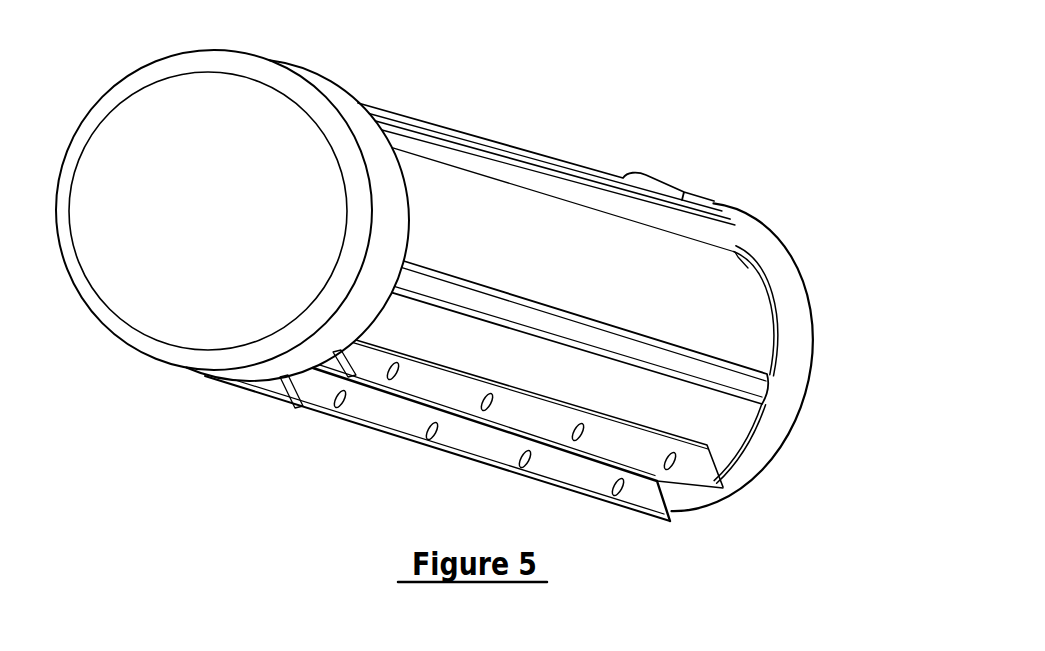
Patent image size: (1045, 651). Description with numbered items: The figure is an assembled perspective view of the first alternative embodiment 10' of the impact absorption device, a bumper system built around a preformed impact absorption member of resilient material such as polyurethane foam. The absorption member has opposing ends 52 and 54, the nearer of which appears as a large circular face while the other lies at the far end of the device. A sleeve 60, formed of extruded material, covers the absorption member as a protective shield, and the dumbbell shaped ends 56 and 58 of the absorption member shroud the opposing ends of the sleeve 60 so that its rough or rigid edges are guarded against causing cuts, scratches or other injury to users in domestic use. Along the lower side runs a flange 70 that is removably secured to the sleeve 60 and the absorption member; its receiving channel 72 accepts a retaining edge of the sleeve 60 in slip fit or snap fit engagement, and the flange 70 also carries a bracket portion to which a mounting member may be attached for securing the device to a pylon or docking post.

The first alternative embodiment of the impact absorption device 10' is at (473, 281).
The end of the impact absorption member 52 is at (222, 228).
The end of the impact absorption member 54 is at (822, 372).
The dumbbell shaped end 56 is at (291, 68).
The dumbbell shaped end 58 is at (778, 270).
The sleeve 60 is at (557, 221).
The flange 70 is at (672, 417).
The receiving channel 72 is at (633, 352).